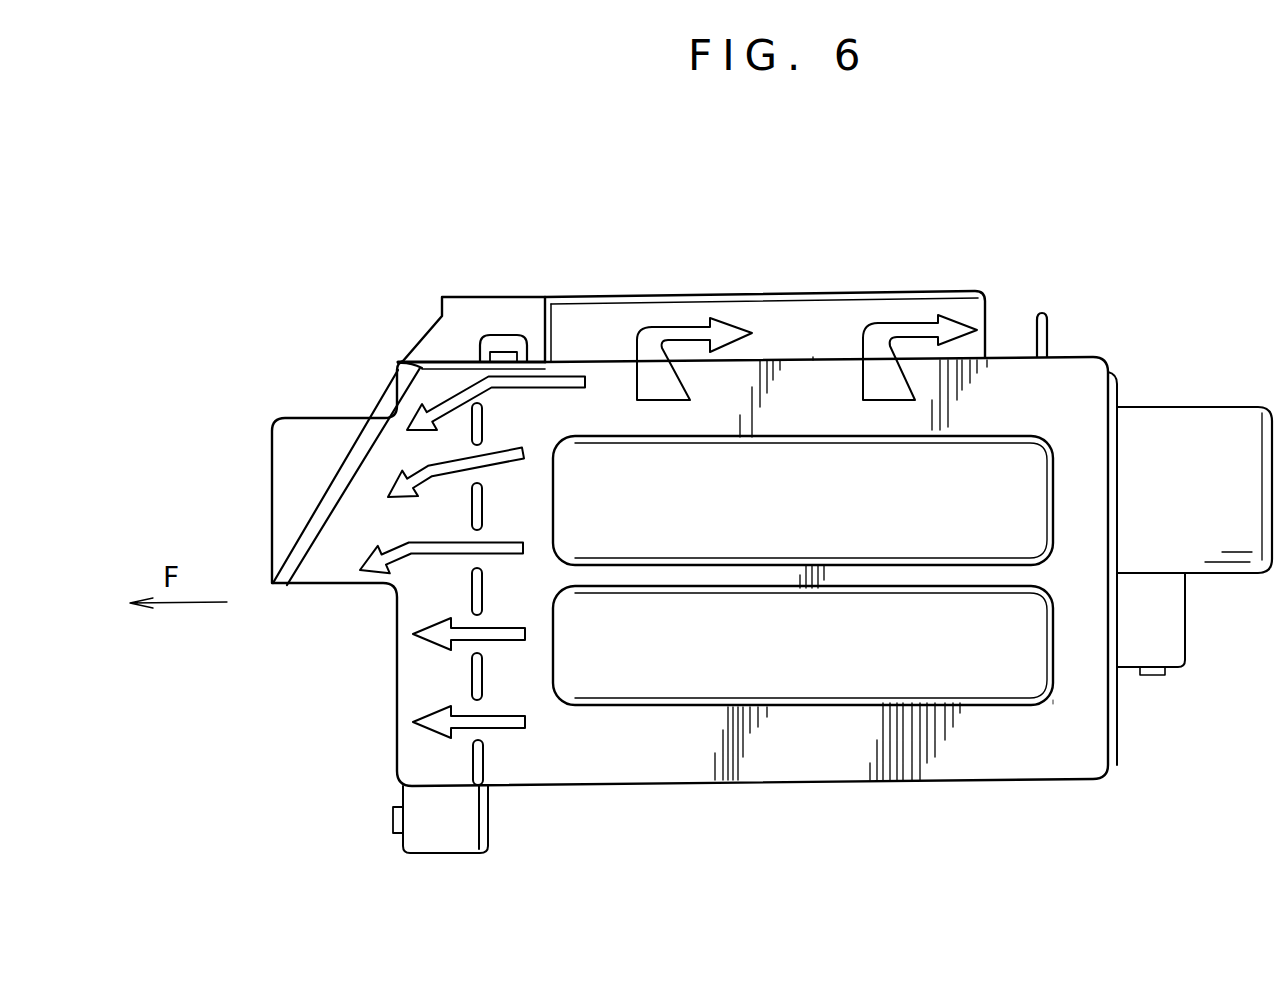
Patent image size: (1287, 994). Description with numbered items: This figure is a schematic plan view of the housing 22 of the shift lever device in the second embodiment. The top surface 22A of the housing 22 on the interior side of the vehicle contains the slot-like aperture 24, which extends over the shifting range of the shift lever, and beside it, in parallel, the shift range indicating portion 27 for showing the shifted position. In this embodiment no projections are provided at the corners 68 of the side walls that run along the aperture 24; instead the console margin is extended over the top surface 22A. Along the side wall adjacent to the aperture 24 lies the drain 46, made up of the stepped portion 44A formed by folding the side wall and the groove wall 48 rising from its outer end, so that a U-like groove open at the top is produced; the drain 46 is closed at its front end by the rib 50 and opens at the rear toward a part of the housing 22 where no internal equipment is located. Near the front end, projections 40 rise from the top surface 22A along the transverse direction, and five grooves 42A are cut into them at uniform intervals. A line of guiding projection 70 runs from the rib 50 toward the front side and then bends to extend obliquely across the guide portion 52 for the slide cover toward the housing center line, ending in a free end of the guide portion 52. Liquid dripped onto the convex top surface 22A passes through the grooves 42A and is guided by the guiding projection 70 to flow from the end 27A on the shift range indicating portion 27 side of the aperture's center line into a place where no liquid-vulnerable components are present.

The housing 22 is at (1065, 325).
The top surface 22A is at (603, 762).
The aperture 24 is at (997, 447).
The shift range indicating portion 27 is at (987, 673).
The end 27A is at (398, 624).
The projections 40 is at (478, 447).
The grooves 42A is at (477, 565).
The stepped portion 44A is at (632, 312).
The drain 46 is at (843, 209).
The groove wall 48 is at (757, 307).
The rib 50 is at (567, 345).
The guide portion 52 is at (298, 440).
The corners 68 is at (813, 357).
The guiding projection 70 is at (355, 460).